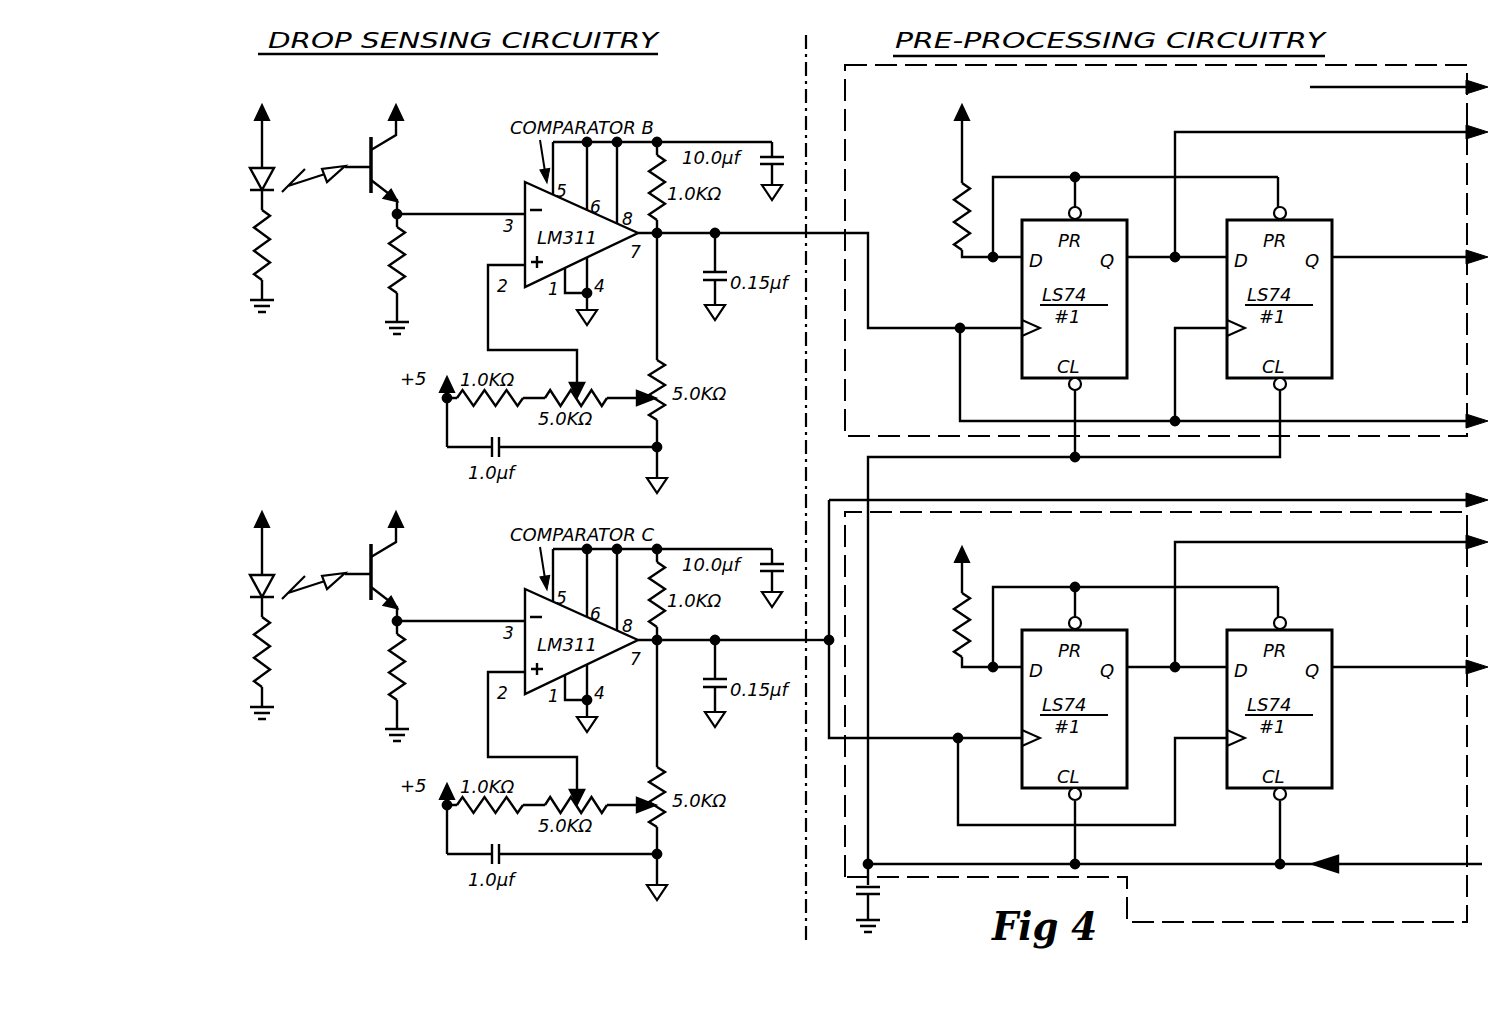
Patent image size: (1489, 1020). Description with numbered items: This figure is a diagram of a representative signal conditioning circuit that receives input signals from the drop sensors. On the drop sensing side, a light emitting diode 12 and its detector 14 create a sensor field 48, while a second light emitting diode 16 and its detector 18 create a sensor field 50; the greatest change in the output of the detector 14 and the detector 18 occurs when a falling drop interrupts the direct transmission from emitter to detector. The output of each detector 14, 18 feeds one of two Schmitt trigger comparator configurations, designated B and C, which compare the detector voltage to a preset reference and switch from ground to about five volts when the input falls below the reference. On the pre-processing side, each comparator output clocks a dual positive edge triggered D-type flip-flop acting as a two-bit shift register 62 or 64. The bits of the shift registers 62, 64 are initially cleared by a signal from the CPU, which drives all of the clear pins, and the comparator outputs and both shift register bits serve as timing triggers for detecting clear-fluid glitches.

The light emitting diode 12 is at (236, 259).
The detector 14 is at (358, 150).
The light emitting diode 16 is at (217, 610).
The detector 18 is at (401, 621).
The sensor field 48 is at (324, 213).
The sensor field 50 is at (324, 625).
The 2-bit shift register 62 is at (1390, 70).
The 2-bit shift register 64 is at (1248, 924).